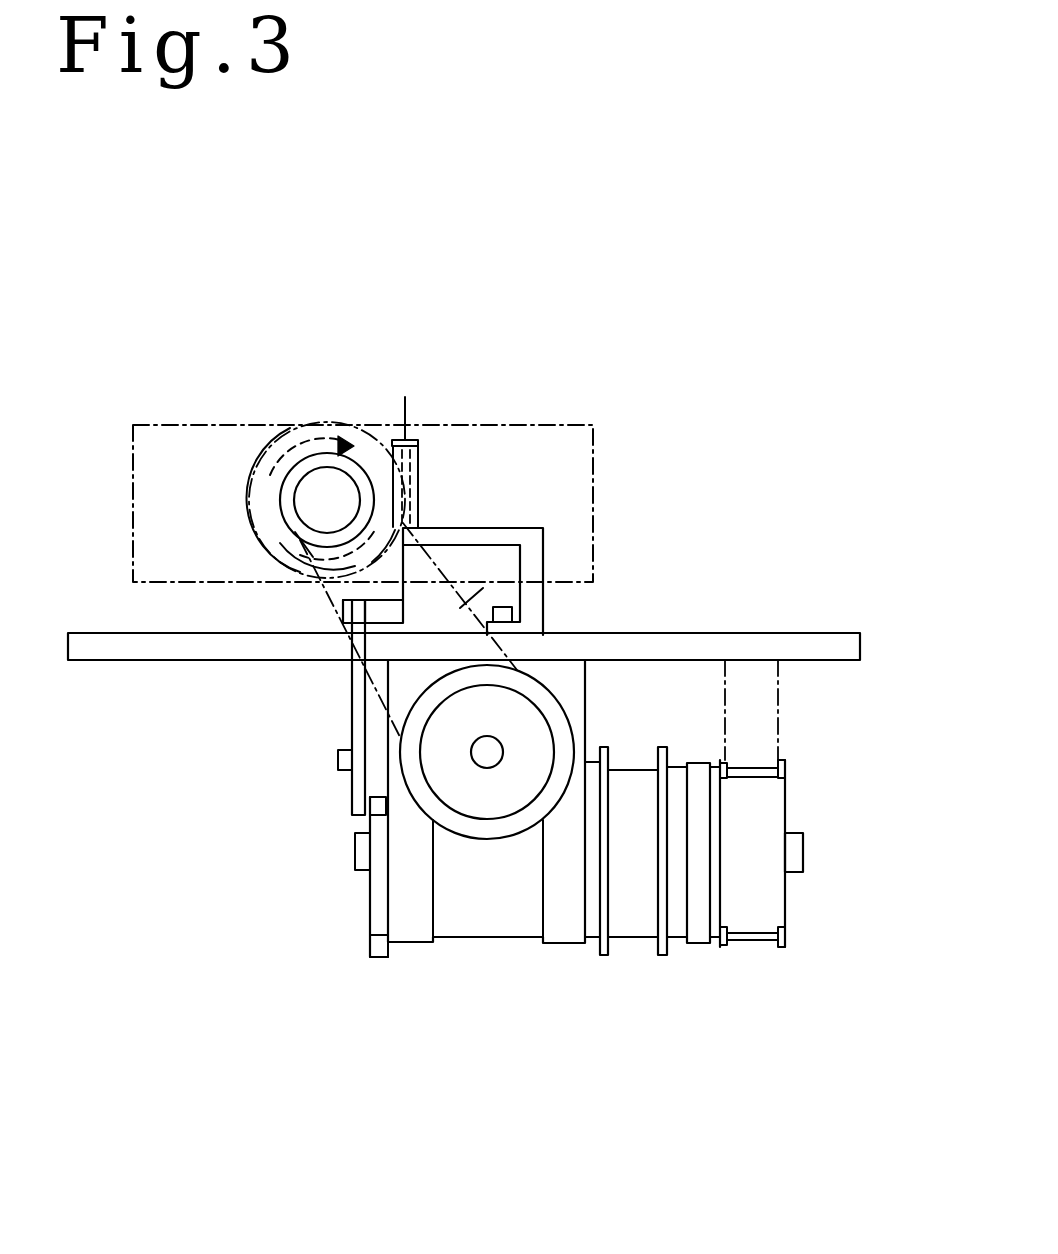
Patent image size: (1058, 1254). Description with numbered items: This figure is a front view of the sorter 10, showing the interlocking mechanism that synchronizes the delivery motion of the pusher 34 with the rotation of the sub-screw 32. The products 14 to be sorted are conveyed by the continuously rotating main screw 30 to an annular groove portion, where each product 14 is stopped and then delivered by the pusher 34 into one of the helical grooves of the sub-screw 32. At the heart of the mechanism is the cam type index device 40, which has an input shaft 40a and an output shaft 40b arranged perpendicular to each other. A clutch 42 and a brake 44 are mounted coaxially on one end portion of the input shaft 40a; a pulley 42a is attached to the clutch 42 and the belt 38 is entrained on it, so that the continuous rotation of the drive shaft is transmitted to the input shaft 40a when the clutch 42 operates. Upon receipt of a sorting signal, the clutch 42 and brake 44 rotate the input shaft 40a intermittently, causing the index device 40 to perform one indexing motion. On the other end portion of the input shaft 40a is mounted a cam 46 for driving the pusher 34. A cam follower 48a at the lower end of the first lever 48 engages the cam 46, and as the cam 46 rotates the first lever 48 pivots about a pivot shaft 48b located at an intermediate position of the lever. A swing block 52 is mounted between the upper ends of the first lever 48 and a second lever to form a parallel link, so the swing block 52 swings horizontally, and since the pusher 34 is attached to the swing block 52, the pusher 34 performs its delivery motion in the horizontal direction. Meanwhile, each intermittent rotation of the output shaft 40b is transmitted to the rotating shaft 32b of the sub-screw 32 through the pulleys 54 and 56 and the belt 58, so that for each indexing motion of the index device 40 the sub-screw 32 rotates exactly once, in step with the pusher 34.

The apparatus 10 is at (688, 402).
The product 14 is at (414, 480).
The main screw 30 is at (535, 404).
The sub-screw 32 is at (260, 437).
The rotating shaft 32b is at (296, 499).
The pusher 34 is at (405, 412).
The belt 38 is at (768, 727).
The cam type index device 40 is at (480, 952).
The input shaft 40a is at (804, 850).
The output shaft 40b is at (490, 752).
The clutch 42 is at (698, 944).
The pulley 42a is at (773, 910).
The brake 44 is at (633, 920).
The cam 46 is at (372, 916).
The first lever 48 is at (350, 708).
The cam follower 48a is at (356, 842).
The pivot shaft 48b is at (338, 758).
The swing block 52 is at (360, 605).
The pulley 54 is at (563, 728).
The pulley 56 is at (400, 527).
The belt 58 is at (518, 572).